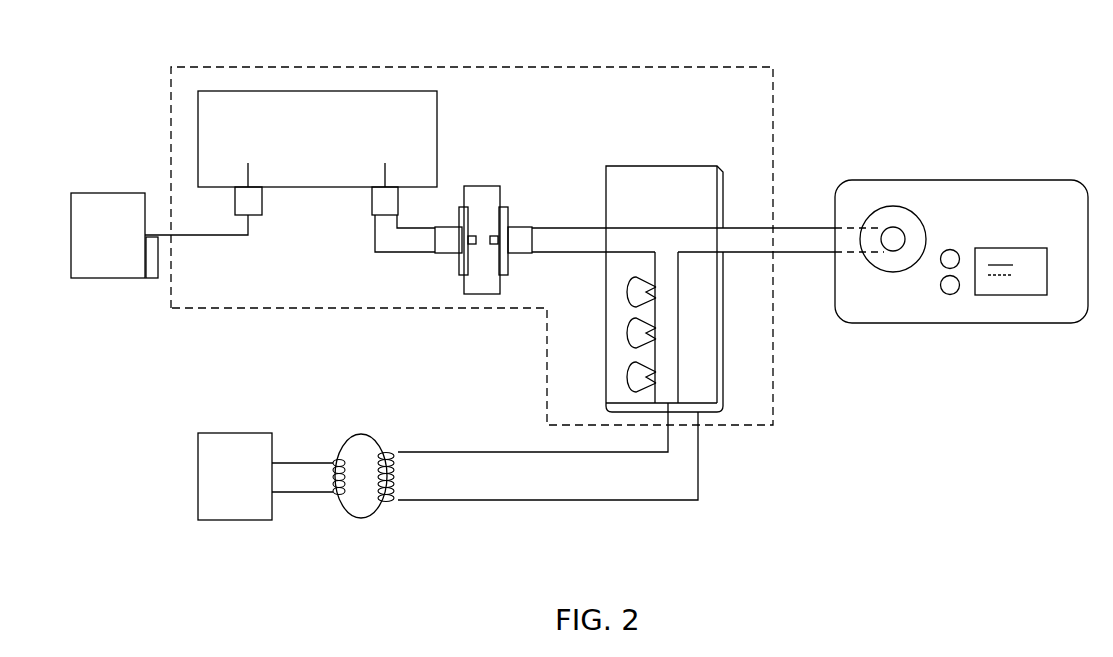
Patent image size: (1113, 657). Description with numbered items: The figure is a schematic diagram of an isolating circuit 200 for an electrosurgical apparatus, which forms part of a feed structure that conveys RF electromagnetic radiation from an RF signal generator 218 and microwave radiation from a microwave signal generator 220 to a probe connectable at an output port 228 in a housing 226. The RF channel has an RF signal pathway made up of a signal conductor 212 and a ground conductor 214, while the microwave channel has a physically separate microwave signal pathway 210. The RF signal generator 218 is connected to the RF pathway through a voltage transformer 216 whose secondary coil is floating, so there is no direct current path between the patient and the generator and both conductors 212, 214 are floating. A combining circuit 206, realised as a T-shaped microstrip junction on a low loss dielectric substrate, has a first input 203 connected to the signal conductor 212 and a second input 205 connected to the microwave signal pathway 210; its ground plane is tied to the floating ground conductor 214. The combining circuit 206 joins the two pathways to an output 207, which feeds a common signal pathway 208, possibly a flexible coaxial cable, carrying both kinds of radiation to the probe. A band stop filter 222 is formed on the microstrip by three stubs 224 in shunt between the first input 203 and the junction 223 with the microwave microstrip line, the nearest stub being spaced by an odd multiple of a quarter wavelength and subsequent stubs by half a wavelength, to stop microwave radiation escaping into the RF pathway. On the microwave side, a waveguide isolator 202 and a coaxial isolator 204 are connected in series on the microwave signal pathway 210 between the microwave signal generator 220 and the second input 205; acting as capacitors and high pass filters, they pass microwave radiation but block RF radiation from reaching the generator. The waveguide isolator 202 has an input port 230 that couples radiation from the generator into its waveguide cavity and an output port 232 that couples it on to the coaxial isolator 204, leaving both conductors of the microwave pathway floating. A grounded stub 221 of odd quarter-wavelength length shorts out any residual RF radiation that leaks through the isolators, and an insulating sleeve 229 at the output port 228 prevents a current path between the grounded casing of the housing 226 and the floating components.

The isolating circuit 200 is at (773, 100).
The waveguide isolator 202 is at (308, 91).
The first input 203 is at (710, 413).
The coaxial isolator 204 is at (500, 170).
The second input 205 is at (605, 227).
The combining circuit 206 is at (639, 182).
The output 207 is at (717, 240).
The common signal pathway 208 is at (798, 237).
The microwave signal pathway 210 is at (220, 238).
The signal conductor 212 is at (533, 453).
The ground conductor 214 is at (607, 501).
The voltage transformer 216 is at (360, 518).
The RF signal generator 218 is at (237, 520).
The microwave signal generator 220 is at (107, 278).
The grounded stub 221 is at (158, 273).
The band stop filter 222 is at (586, 325).
The junction 223 is at (662, 240).
The stubs 224 is at (633, 378).
The housing 226 is at (1023, 180).
The output port 228 is at (890, 238).
The insulating sleeve 229 is at (892, 272).
The input port 230 is at (262, 202).
The output port 232 is at (372, 202).